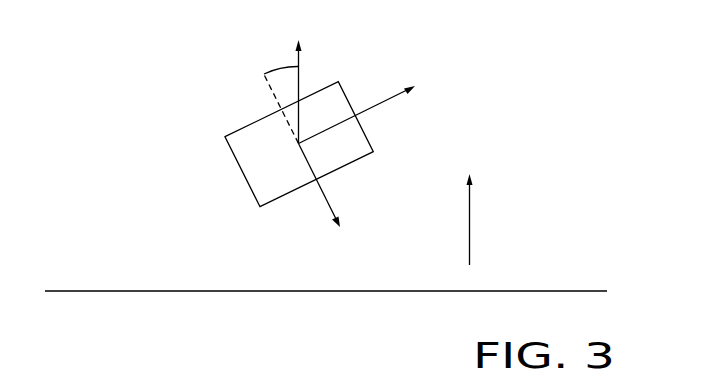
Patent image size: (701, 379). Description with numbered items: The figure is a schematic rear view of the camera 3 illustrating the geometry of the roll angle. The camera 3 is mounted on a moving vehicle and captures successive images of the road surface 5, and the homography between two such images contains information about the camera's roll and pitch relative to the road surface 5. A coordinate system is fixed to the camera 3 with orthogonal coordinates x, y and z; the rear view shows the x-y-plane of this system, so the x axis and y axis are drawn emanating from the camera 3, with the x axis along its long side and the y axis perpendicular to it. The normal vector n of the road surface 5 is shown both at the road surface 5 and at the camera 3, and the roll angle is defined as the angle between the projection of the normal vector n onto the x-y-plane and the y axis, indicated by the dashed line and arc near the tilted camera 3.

The camera 3 is at (237, 133).
The road surface 5 is at (553, 290).
The normal vector n is at (384, 152).
The x coordinate x is at (360, 115).
The y coordinate y is at (320, 194).